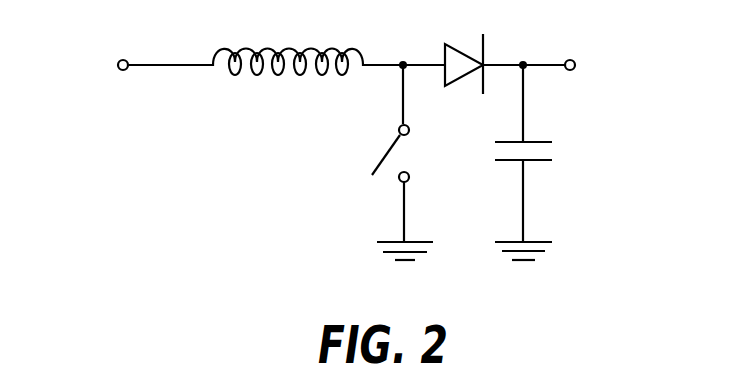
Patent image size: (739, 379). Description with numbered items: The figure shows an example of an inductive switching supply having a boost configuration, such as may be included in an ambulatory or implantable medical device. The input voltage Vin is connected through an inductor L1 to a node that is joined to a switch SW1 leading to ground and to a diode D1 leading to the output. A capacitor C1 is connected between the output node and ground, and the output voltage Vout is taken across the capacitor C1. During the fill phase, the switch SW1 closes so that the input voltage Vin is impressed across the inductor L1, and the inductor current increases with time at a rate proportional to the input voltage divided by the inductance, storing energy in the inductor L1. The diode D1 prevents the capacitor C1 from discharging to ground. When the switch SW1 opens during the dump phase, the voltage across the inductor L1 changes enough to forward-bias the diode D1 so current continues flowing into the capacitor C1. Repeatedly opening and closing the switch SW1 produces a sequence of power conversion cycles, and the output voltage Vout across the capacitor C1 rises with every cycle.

The input voltage Vin is at (94, 54).
The inductor L1 is at (287, 37).
The diode D1 is at (460, 47).
The switch SW1 is at (371, 162).
The capacitor C1 is at (543, 162).
The output voltage Vout is at (602, 55).